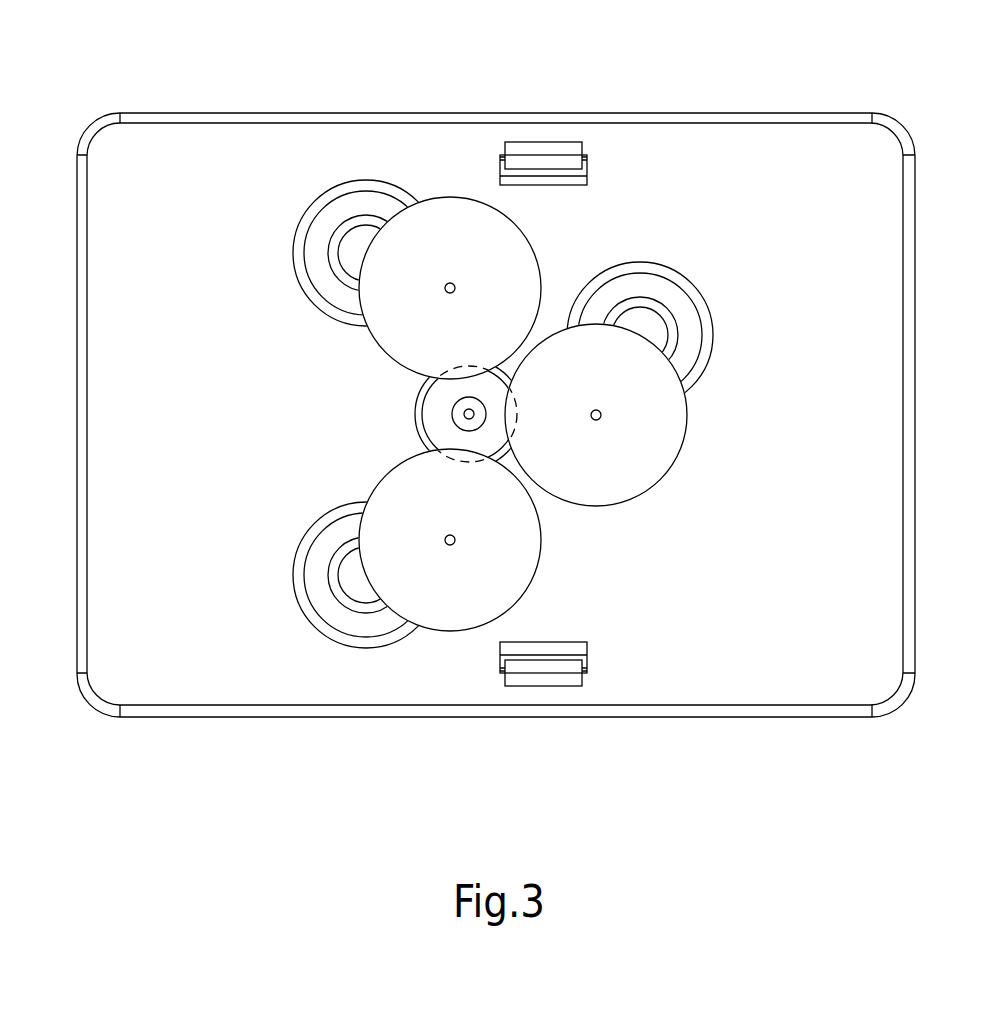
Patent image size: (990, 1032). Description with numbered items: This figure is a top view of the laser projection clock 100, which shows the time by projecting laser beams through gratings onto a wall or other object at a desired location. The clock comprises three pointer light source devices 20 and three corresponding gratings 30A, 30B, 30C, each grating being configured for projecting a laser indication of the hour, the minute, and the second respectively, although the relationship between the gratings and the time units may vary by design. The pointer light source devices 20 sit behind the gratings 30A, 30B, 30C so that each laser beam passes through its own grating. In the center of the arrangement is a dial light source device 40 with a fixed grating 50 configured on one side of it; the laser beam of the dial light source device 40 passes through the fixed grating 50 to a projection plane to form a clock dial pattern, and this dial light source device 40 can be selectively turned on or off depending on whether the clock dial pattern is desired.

The laser projection clock 100 is at (966, 45).
The pointer light source device 20 is at (330, 571).
The grating 30A is at (448, 634).
The grating 30B is at (451, 195).
The grating 30C is at (684, 446).
The dial light source device 40 is at (410, 437).
The fixed grating 50 is at (411, 408).